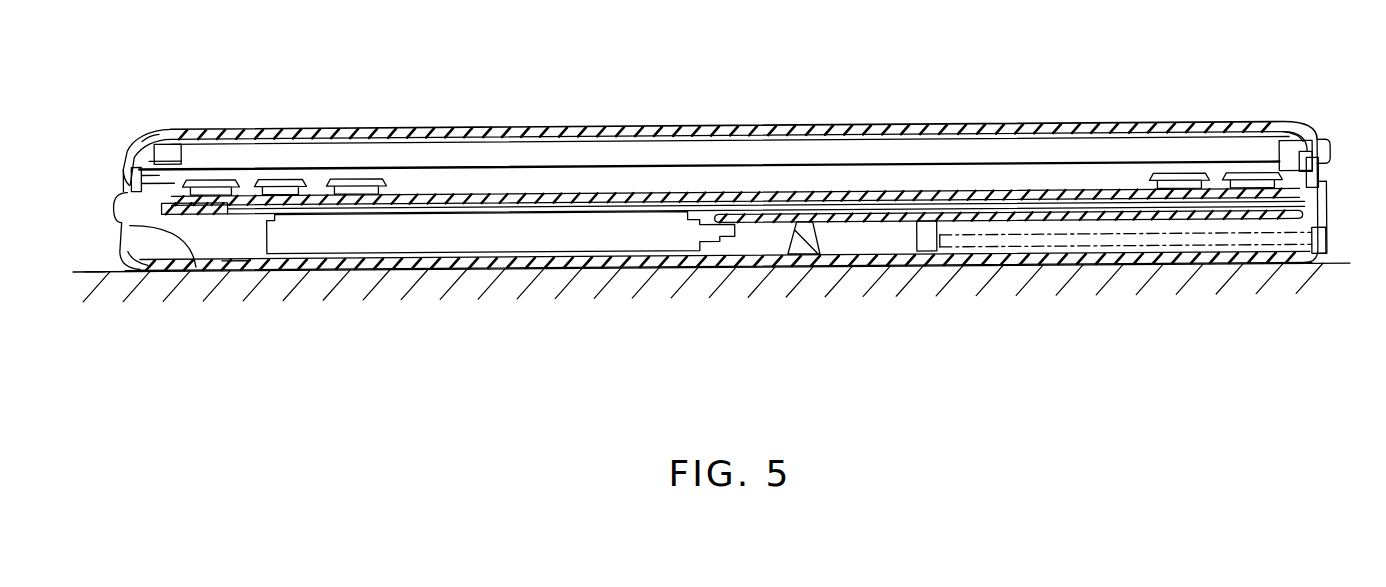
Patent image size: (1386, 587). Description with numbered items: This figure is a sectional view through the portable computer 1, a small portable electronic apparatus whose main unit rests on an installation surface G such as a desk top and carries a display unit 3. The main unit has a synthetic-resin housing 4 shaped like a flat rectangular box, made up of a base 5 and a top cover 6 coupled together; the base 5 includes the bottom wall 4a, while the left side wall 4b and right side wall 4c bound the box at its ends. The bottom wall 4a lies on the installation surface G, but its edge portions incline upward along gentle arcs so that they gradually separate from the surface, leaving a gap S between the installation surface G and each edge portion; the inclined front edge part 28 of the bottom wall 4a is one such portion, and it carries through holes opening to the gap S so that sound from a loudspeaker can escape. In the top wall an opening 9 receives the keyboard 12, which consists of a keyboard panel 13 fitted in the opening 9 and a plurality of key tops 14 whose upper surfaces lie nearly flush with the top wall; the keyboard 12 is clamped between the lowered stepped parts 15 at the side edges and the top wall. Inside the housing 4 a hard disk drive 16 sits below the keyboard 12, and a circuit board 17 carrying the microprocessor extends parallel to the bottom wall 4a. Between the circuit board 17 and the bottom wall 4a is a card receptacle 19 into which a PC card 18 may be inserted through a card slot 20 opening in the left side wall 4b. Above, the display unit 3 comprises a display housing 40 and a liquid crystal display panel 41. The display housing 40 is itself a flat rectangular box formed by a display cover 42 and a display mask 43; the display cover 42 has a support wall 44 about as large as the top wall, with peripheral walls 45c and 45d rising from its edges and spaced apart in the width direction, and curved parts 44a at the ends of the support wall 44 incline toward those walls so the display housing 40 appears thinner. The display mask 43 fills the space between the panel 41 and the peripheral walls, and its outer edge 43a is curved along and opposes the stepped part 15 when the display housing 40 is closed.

The portable computer 1 is at (942, 84).
The display unit 3 is at (506, 122).
The housing 4 is at (185, 360).
The bottom wall 4a is at (738, 268).
The left side wall 4b is at (1330, 210).
The right side wall 4c is at (119, 213).
The base 5 is at (235, 272).
The top cover 6 is at (190, 266).
The opening 9 is at (182, 196).
The keyboard 12 is at (356, 172).
The keyboard panel 13 is at (870, 208).
The key tops 14 is at (268, 186).
The stepped part 15 is at (132, 186).
The hard disk drive 16 is at (540, 256).
The circuit board 17 is at (1000, 222).
The PC card 18 is at (1207, 250).
The card receptacle 19 is at (1110, 252).
The card slot 20 is at (1328, 245).
The inclined front edge part 28 is at (165, 264).
The display housing 40 is at (1330, 84).
The liquid crystal display panel 41 is at (665, 154).
The display cover 42 is at (1268, 141).
The display mask 43 is at (1308, 149).
The outer edge 43a is at (168, 158).
The support wall 44 is at (767, 134).
The curved part 44a is at (143, 148).
The third peripheral wall 45c is at (1326, 156).
The fourth peripheral wall 45d is at (127, 153).
The installation surface G is at (95, 274).
The gap S is at (133, 274).